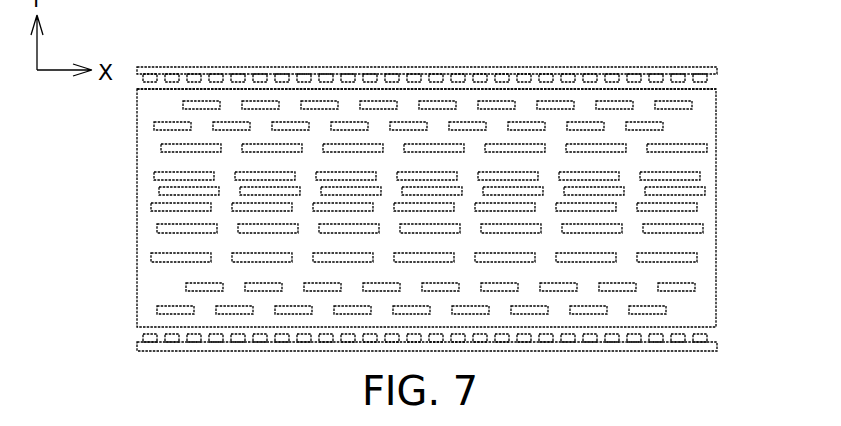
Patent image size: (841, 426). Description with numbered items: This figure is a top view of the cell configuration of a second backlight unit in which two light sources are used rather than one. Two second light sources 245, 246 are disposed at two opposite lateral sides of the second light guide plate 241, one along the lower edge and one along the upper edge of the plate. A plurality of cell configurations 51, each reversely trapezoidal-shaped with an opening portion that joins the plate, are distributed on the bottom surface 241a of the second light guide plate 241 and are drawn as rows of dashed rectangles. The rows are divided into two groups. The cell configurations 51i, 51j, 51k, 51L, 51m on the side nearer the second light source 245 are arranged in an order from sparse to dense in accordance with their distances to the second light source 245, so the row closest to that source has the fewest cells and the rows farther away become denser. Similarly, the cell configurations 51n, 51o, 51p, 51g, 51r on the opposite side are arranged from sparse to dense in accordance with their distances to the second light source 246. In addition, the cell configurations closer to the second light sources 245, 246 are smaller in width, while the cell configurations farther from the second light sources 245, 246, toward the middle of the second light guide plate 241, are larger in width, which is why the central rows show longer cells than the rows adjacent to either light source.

The second light source 246 is at (717, 70).
The second light source 245 is at (717, 345).
The second light guide plate 241 is at (126, 186).
The bottom surface 241a is at (148, 104).
The cell configuration 51 is at (153, 152).
The cell configuration 51r is at (692, 105).
The cell configuration 51g is at (663, 126).
The cell configuration 51p is at (707, 148).
The cell configuration 51o is at (700, 177).
The cell configuration 51n is at (705, 191).
The cell configuration 51m is at (697, 207).
The cell configuration 51L is at (703, 228).
The cell configuration 51k is at (697, 257).
The cell configuration 51j is at (695, 287).
The cell configuration 51i is at (666, 310).